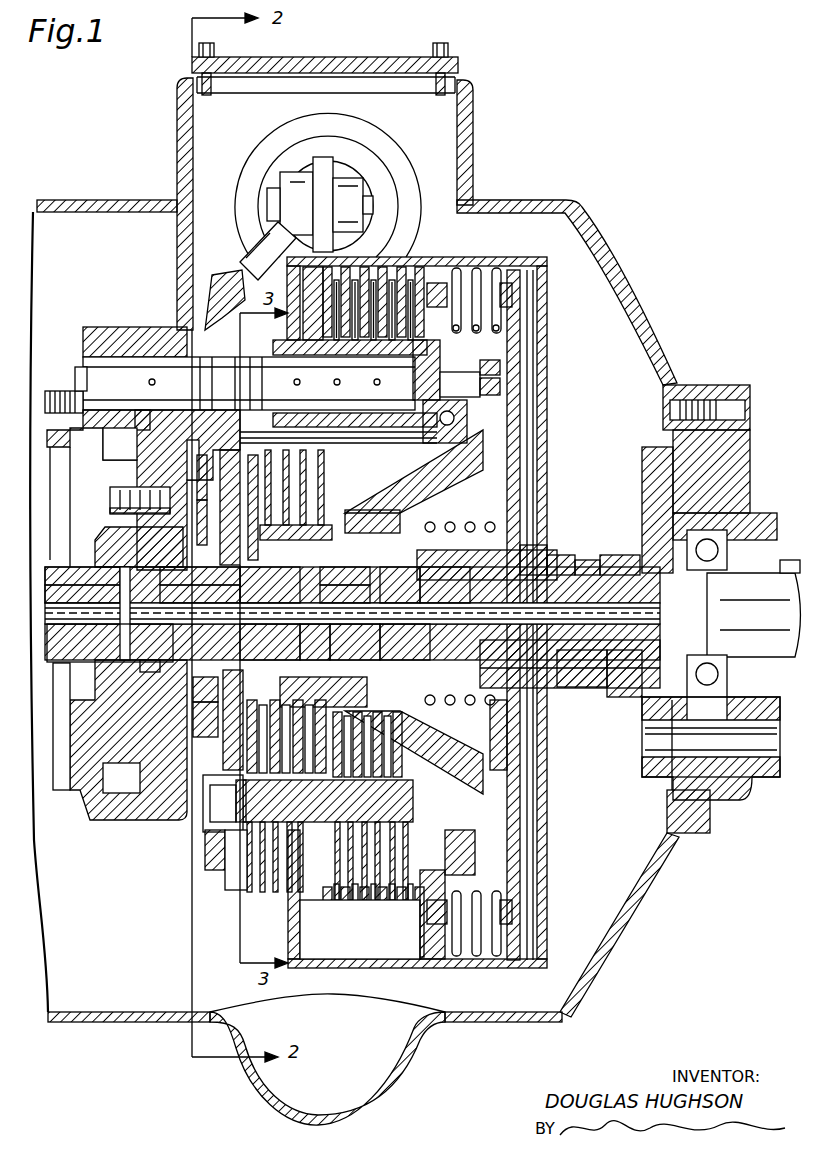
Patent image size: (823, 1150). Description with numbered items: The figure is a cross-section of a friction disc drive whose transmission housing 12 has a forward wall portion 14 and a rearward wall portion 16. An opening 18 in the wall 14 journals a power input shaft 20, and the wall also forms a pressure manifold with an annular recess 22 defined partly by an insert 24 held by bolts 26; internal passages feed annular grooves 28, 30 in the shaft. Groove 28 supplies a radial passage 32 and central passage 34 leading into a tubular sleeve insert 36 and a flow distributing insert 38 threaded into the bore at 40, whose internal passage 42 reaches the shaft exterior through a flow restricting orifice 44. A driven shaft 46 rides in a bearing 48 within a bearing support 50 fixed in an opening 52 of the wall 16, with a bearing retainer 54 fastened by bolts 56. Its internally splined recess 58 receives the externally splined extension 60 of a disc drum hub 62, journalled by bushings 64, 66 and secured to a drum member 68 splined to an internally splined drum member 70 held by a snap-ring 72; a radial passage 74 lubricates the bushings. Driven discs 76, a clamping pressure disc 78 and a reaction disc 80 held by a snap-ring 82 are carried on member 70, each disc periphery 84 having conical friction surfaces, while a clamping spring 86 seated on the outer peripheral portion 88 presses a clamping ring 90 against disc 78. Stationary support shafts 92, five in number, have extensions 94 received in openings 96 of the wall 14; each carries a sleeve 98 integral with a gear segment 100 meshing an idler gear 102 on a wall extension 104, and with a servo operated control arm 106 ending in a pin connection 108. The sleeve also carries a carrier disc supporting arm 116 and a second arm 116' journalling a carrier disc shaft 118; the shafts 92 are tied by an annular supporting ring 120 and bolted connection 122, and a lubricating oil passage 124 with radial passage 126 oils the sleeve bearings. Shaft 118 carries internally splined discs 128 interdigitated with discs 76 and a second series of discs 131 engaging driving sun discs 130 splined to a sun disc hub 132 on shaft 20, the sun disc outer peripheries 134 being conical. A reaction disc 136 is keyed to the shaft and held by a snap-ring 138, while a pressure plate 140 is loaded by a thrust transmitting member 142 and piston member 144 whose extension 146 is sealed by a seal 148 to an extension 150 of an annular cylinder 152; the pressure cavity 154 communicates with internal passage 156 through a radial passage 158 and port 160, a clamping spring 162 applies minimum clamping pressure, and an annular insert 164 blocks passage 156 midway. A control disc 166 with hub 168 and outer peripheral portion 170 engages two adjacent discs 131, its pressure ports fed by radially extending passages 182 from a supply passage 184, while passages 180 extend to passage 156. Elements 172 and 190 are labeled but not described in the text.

The transmission housing 12 is at (176, 153).
The forward wall portion 14 is at (128, 356).
The rearward wall portion 16 is at (650, 340).
The opening 18 is at (108, 667).
The power input shaft 20 is at (95, 664).
The pressure distributing annular recess 22 is at (110, 497).
The insert 24 is at (90, 755).
The bolts 26 is at (112, 511).
The annular groove 28 is at (139, 547).
The annular groove 30 is at (150, 672).
The radial passage 32 is at (82, 595).
The central passage 34 is at (82, 577).
The tubular sleeve insert 36 is at (312, 604).
The flow distributing insert 38 is at (570, 664).
The threaded section 40 is at (618, 698).
The internal passage 42 is at (568, 688).
The flow restricting orifice 44 is at (753, 615).
The driven shaft 46 is at (790, 560).
The bearing 48 is at (712, 545).
The bearing support 50 is at (752, 447).
The opening 52 is at (720, 442).
The bearing retainer 54 is at (657, 448).
The bolts 56 is at (770, 757).
The internally splined recess 58 is at (583, 560).
The externally splined extension 60 is at (550, 556).
The disc drum hub 62 is at (538, 547).
The bushing 64 is at (445, 585).
The bushing 66 is at (615, 556).
The drum member 68 is at (520, 398).
The internally splined drum member 70 is at (512, 262).
The snap-ring 72 is at (548, 277).
The radial passage 74 is at (487, 565).
The driven discs 76 is at (408, 266).
The clamping pressure disc 78 is at (425, 270).
The reaction disc 80 is at (300, 318).
The snap-ring 82 is at (262, 245).
The periphery 84 is at (365, 355).
The clamping spring 86 is at (476, 270).
The outer peripheral portion 88 is at (514, 300).
The clamping ring 90 is at (420, 330).
The stationary support shafts 92 is at (380, 428).
The extensions 94 is at (98, 370).
The opening 96 is at (105, 328).
The sleeve 98 is at (410, 438).
The gear segment 100 is at (140, 445).
The idler gear 102 is at (197, 518).
The extension 104 is at (220, 558).
The servo operated control arm 106 is at (223, 274).
The pin connection 108 is at (330, 178).
The carrier disc supporting arm 116 is at (405, 861).
The second arm 116' is at (221, 860).
The carrier disc shaft 118 is at (328, 801).
The annular supporting ring 120 is at (498, 358).
The bolted connection 122 is at (500, 380).
The lubricating oil passage 124 is at (143, 425).
The radial passage 126 is at (152, 378).
The internally splined discs 128 is at (403, 762).
The driving sun discs 130 is at (306, 462).
The second series of discs 131 is at (246, 880).
The sun disc hub 132 is at (314, 642).
The outer peripheries 134 is at (245, 803).
The reaction disc 136 is at (226, 760).
The snap-ring 138 is at (193, 700).
The pressure plate 140 is at (281, 801).
The thrust transmitting member 142 is at (335, 525).
The piston member 144 is at (385, 510).
The extension 146 is at (400, 512).
The seal 148 is at (355, 642).
The extension 150 is at (345, 576).
The annular cylinder 152 is at (507, 765).
The pressure cavity 154 is at (486, 760).
The internal passage 156 is at (405, 642).
The radial passage 158 is at (400, 585).
The port 160 is at (345, 594).
The clamping spring 162 is at (497, 704).
The annular insert 164 is at (200, 593).
The control disc 166 is at (197, 542).
The hub 168 is at (193, 720).
The outer peripheral portion 170 is at (186, 447).
The gear 172 is at (270, 642).
The passages 180 is at (270, 585).
The radially extending passages 182 is at (200, 576).
The supply passage 184 is at (138, 613).
The hub 190 is at (110, 643).